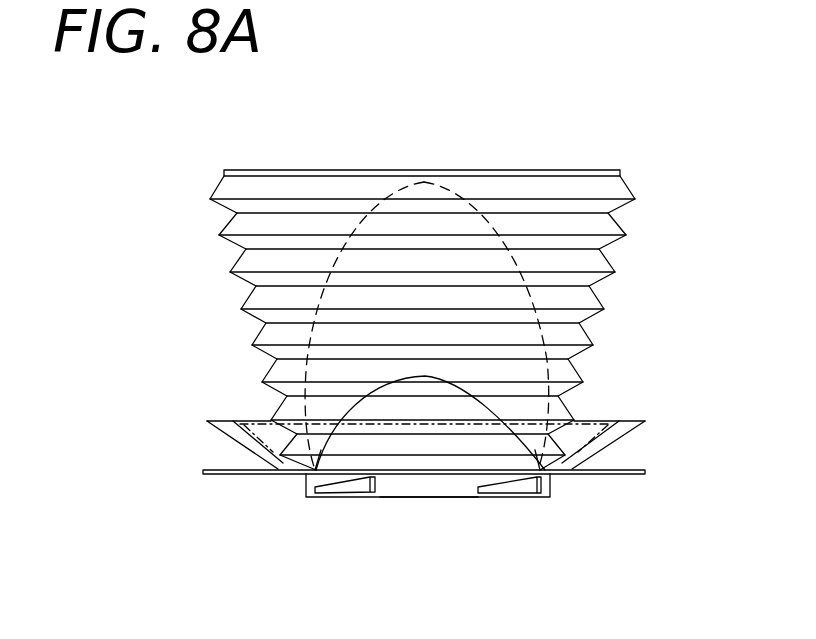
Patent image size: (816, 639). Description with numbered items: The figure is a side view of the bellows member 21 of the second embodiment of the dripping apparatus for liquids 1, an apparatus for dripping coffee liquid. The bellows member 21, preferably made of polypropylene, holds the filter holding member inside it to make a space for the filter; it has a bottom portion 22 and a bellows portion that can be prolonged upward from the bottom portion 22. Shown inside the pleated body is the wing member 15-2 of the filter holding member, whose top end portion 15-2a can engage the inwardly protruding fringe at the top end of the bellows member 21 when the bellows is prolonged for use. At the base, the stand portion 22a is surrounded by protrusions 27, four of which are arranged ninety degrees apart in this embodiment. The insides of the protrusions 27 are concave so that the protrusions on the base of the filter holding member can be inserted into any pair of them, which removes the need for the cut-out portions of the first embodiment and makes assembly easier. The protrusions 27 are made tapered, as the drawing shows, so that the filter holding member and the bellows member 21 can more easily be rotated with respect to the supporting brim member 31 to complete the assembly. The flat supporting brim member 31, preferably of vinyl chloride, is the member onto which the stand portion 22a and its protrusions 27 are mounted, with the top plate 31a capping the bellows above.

The dripping apparatus for liquids 1 is at (509, 154).
The wing member 15-2 is at (528, 373).
The top end portion of wing member 15-2a is at (411, 182).
The bellows member 21 is at (608, 283).
The bottom portion 22 is at (345, 497).
The stand portion 22a is at (437, 497).
The protrusion 27 is at (365, 492).
The supporting brim member 31 is at (614, 475).
The top plate 31a is at (619, 170).